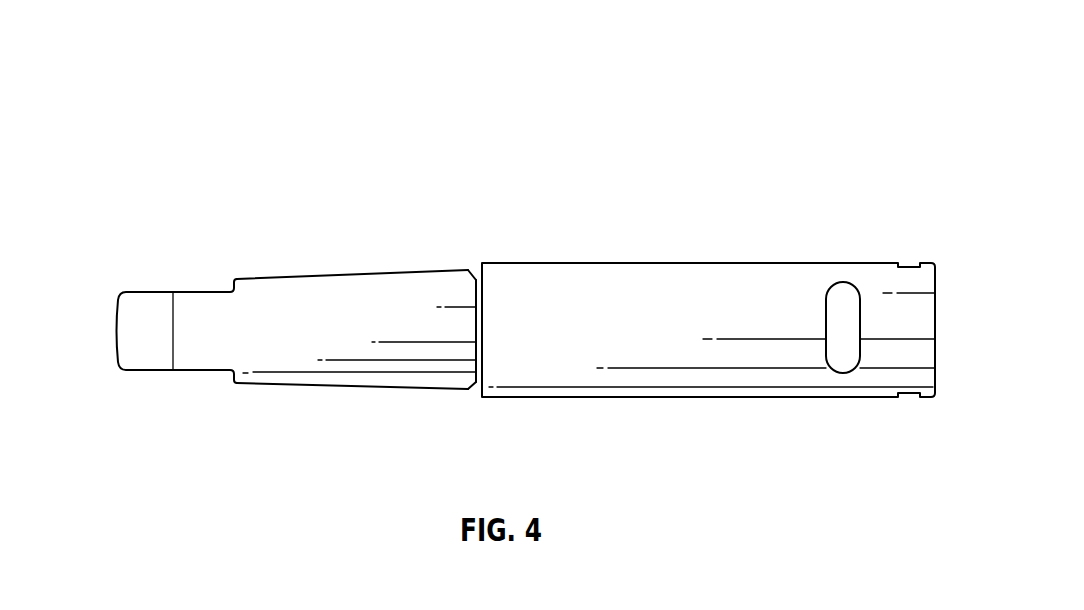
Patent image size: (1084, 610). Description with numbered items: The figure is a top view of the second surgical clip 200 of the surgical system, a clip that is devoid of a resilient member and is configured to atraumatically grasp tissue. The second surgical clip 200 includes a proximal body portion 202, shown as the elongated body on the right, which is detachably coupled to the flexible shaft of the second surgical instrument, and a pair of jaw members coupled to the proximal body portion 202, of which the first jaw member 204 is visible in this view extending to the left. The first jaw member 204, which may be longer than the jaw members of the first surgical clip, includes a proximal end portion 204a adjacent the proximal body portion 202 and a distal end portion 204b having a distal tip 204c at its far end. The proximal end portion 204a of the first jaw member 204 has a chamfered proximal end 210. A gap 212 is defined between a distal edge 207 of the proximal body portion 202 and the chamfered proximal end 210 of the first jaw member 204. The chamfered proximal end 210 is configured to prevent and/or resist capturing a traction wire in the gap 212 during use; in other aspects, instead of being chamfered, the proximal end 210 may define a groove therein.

The second surgical clip 200 is at (351, 146).
The proximal body portion 202 is at (692, 262).
The first jaw member 204 is at (331, 266).
The proximal end portion 204a is at (397, 283).
The distal end portion 204b is at (205, 310).
The distal tip 204c is at (143, 291).
The distal edge 207 is at (475, 345).
The chamfered proximal end 210 is at (460, 290).
The gap 212 is at (473, 396).